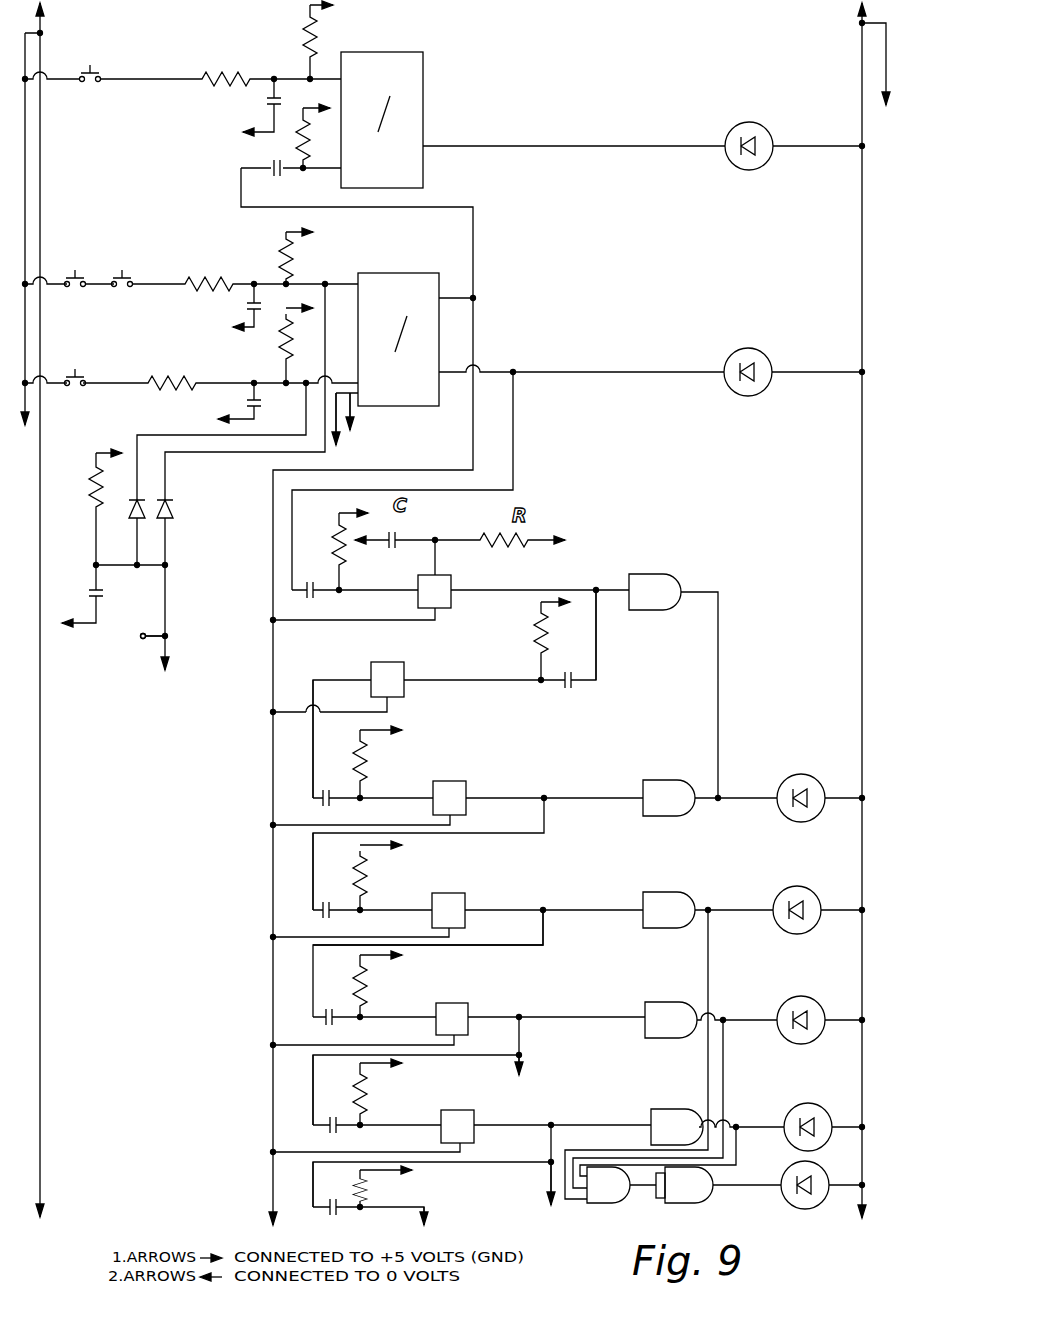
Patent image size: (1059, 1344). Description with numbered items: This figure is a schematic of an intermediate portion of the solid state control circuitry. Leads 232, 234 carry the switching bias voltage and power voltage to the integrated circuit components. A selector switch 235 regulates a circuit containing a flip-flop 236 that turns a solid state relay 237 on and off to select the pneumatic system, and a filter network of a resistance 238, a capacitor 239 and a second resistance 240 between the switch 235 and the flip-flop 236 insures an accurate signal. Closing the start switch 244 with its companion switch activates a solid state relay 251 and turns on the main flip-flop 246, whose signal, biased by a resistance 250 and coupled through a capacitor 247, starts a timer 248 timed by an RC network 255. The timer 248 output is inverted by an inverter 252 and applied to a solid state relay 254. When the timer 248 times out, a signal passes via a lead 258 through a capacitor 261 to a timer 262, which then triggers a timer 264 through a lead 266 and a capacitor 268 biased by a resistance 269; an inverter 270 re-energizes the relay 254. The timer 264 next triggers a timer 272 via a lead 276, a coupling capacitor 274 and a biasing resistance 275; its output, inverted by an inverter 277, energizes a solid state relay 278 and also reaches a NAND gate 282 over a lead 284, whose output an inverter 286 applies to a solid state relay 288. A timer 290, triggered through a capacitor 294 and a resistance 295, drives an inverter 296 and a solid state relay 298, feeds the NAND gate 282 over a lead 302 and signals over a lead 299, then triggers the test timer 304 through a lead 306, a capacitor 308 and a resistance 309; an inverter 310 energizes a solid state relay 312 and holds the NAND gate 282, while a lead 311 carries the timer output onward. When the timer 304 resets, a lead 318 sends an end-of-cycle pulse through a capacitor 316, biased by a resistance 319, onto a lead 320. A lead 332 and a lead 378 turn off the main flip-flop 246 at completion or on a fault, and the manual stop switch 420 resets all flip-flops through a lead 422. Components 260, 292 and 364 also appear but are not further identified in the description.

The lead 232 is at (862, 23).
The lead 234 is at (41, 33).
The selector switch 235 is at (100, 71).
The flip-flop 236 is at (418, 74).
The solid state relay 237 is at (749, 122).
The resistance 238 is at (207, 72).
The capacitor 239 is at (268, 106).
The second resistance 240 is at (318, 30).
The start switch 244 is at (77, 276).
The main flip-flop 246 is at (390, 283).
The capacitor 247 is at (312, 582).
The timer 248 is at (452, 582).
The resistance 250 is at (345, 563).
The solid state relay 251 is at (750, 349).
The inverter 252 is at (658, 586).
The solid state relay 254 is at (801, 775).
The RC network 255 is at (440, 522).
The lead 258 is at (598, 662).
The resistor 260 is at (545, 660).
The capacitor 261 is at (571, 688).
The timer 262 is at (404, 690).
The timer 264 is at (456, 790).
The lead 266 is at (313, 760).
The capacitor 268 is at (321, 800).
The resistance 269 is at (366, 762).
The inverter 270 is at (658, 790).
The timer 272 is at (456, 905).
The coupling capacitor 274 is at (321, 912).
The resistance 275 is at (130, 278).
The lead 276 is at (313, 848).
The inverter 277 is at (672, 905).
The solid state relay 278 is at (797, 886).
The NAND gate 282 is at (592, 1200).
The lead 284 is at (708, 962).
The inverter 286 is at (683, 1200).
The solid state relay 288 is at (805, 1205).
The timer 290 is at (460, 1010).
The conductor 292 is at (543, 940).
The capacitor 294 is at (324, 1020).
The resistance 295 is at (366, 992).
The inverter 296 is at (662, 1012).
The solid state relay 298 is at (801, 996).
The lead 299 is at (522, 1058).
The lead 302 is at (725, 1075).
The test timer 304 is at (462, 1120).
The lead 306 is at (313, 1098).
The capacitor 308 is at (328, 1128).
The resistance 309 is at (366, 1098).
The inverter 310 is at (672, 1115).
The lead 311 is at (548, 1175).
The solid state relay 312 is at (808, 1103).
The capacitor 316 is at (328, 1210).
The lead 318 is at (313, 1192).
The resistance 319 is at (366, 1200).
The lead 320 is at (426, 1208).
The lead 332 is at (338, 440).
The conductor 364 is at (271, 483).
The lead 378 is at (352, 410).
The manual stop switch 420 is at (82, 377).
The lead 422 is at (163, 648).